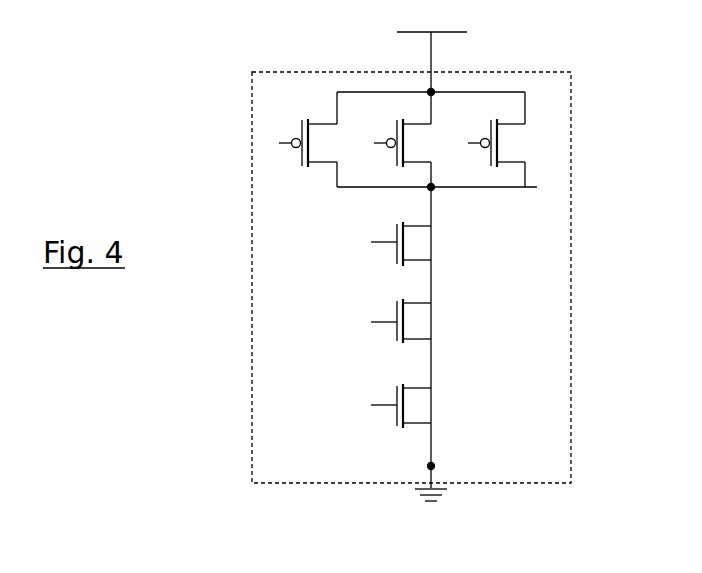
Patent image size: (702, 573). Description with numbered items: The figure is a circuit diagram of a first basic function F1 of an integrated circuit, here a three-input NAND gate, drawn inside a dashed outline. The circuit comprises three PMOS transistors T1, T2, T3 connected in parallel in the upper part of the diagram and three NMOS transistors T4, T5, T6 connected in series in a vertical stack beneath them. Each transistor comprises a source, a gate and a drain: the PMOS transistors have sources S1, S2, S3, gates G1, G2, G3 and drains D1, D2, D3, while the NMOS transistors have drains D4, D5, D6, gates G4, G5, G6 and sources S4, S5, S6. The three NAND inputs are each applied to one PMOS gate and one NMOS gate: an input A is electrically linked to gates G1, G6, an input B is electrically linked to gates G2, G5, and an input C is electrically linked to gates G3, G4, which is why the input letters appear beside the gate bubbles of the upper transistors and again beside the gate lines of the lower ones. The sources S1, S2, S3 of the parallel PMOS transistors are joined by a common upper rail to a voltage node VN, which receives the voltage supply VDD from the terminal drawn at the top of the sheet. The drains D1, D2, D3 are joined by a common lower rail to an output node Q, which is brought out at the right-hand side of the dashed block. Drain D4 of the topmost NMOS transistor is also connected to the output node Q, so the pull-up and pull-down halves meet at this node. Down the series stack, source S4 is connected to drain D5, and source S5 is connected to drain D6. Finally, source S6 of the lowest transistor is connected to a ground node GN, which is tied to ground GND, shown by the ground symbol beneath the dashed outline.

The first basic function F1 is at (252, 110).
The voltage supply VDD is at (432, 51).
The voltage node VN is at (430, 91).
The output node Q is at (447, 180).
The PMOS transistor T1 is at (301, 126).
The PMOS transistor T2 is at (396, 126).
The PMOS transistor T3 is at (490, 126).
The NMOS transistor T4 is at (396, 227).
The NMOS transistor T5 is at (396, 304).
The NMOS transistor T6 is at (396, 389).
The source S1 is at (322, 113).
The source S2 is at (417, 113).
The source S3 is at (511, 113).
The source S4 is at (418, 271).
The source S5 is at (418, 349).
The source S6 is at (418, 433).
The drain D1 is at (322, 171).
The drain D2 is at (417, 171).
The drain D3 is at (511, 171).
The drain D4 is at (417, 218).
The drain D5 is at (417, 296).
The drain D6 is at (417, 380).
The gate G1 is at (290, 156).
The gate G2 is at (385, 156).
The gate G3 is at (479, 156).
The gate G4 is at (384, 254).
The gate G5 is at (384, 331).
The gate G6 is at (384, 415).
The input A is at (271, 143).
The input B is at (366, 143).
The input C is at (461, 143).
The ground node GN is at (429, 465).
The ground GND is at (454, 495).